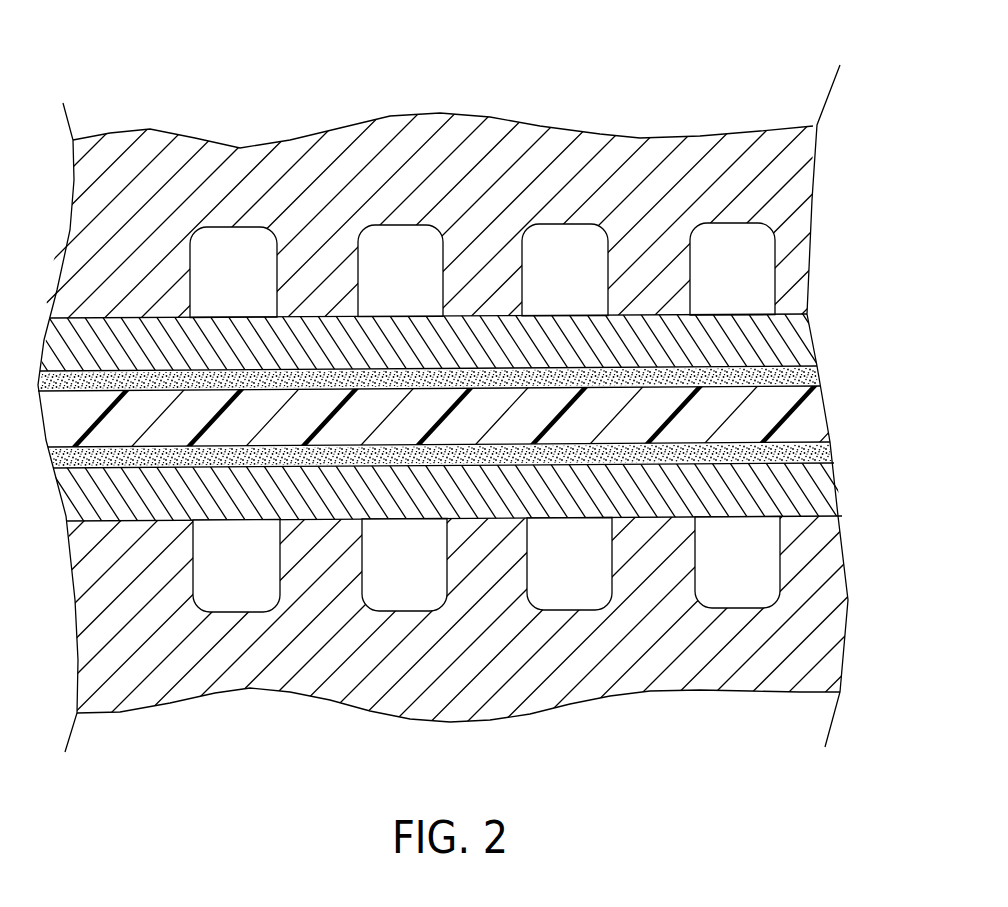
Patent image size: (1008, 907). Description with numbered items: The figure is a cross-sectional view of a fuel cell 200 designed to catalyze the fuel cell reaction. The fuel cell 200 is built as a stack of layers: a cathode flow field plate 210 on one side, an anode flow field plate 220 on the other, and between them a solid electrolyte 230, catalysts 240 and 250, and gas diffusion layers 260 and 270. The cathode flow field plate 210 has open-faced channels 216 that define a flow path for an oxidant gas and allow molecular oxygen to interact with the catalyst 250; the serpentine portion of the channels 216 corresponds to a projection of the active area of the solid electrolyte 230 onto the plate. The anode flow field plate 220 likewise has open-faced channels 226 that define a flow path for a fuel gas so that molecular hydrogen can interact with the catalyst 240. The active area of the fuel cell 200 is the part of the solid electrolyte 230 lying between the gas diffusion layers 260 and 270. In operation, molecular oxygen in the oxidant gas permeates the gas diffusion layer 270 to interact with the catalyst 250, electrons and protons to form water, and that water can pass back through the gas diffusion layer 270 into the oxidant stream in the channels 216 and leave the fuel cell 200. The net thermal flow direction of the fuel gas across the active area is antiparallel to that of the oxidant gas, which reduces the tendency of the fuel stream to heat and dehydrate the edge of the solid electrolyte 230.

The fuel cell 200 is at (630, 75).
The cathode flow field plate 210 is at (432, 143).
The open-faced channels 216 is at (363, 210).
The anode flow field plate 220 is at (630, 663).
The open-faced channels 226 is at (384, 628).
The solid electrolyte 230 is at (805, 413).
The catalyst 240 is at (817, 452).
The catalyst 250 is at (807, 375).
The gas diffusion layer 260 is at (820, 498).
The gas diffusion layer 270 is at (783, 330).